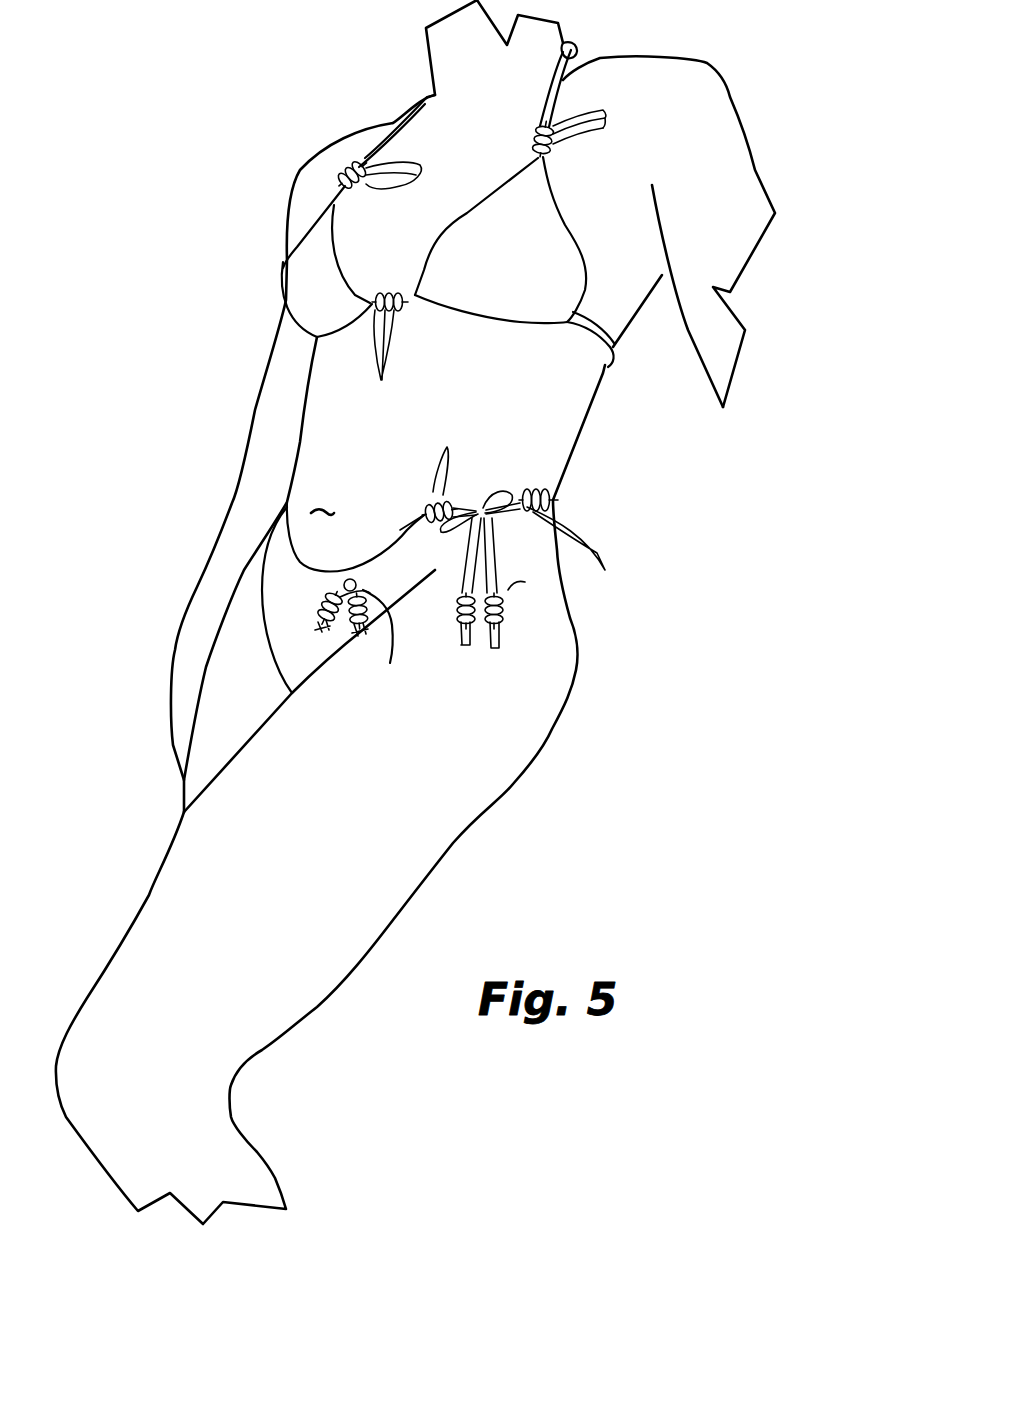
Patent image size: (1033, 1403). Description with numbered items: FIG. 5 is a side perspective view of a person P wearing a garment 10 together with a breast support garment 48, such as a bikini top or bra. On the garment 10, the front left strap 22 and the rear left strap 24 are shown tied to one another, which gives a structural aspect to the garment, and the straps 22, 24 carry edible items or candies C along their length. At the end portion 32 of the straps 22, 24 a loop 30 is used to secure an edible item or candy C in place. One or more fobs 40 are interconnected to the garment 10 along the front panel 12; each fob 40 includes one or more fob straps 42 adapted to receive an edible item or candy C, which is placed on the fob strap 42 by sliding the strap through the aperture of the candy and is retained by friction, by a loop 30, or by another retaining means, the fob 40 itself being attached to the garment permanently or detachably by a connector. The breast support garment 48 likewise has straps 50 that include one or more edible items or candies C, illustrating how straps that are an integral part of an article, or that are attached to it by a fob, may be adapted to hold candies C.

The person P is at (732, 100).
The garment 10 is at (356, 518).
The front panel 12 is at (290, 617).
The front left strap 22 is at (417, 497).
The rear left strap 24 is at (530, 476).
The loop 30 is at (454, 625).
The end portion 32 is at (455, 658).
The fob 40 is at (340, 597).
The fob strap 42 is at (394, 645).
The breast support garment 48 is at (594, 182).
The straps 50 is at (598, 62).
The edible item or candy C is at (497, 358).